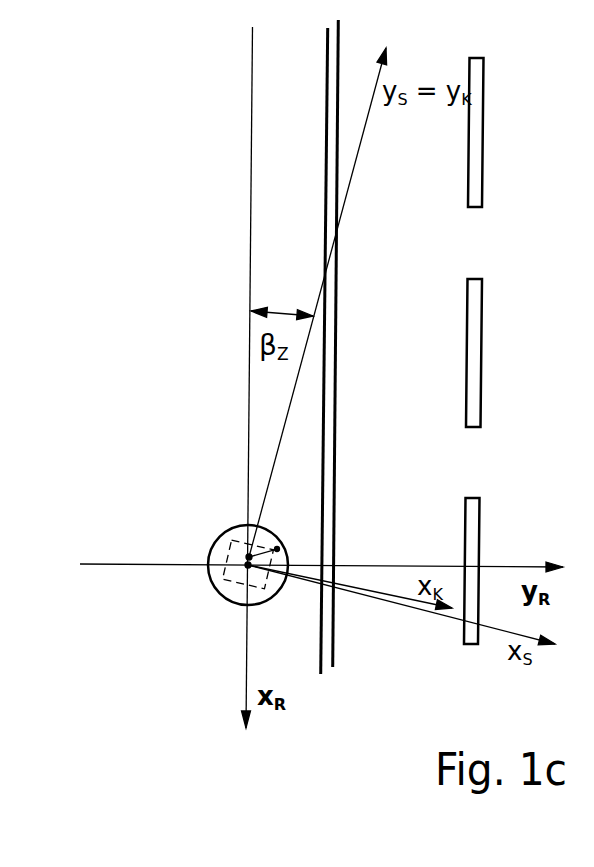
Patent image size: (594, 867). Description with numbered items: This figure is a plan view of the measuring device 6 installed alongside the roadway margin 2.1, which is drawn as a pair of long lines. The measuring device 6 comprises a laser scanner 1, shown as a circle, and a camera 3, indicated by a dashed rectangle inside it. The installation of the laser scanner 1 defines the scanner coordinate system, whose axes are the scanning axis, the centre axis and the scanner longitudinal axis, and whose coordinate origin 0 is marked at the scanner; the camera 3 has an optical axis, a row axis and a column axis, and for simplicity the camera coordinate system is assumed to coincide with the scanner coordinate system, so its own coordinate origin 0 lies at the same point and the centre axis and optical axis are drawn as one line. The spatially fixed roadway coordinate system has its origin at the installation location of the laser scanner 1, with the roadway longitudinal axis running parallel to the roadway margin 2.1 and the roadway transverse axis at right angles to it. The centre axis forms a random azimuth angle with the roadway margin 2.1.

The coordinate system origin 0 is at (249, 557).
The laser scanner 1 is at (203, 566).
The roadway margin 2.1 is at (328, 535).
The camera 3 is at (228, 552).
The measuring device 6 is at (205, 588).